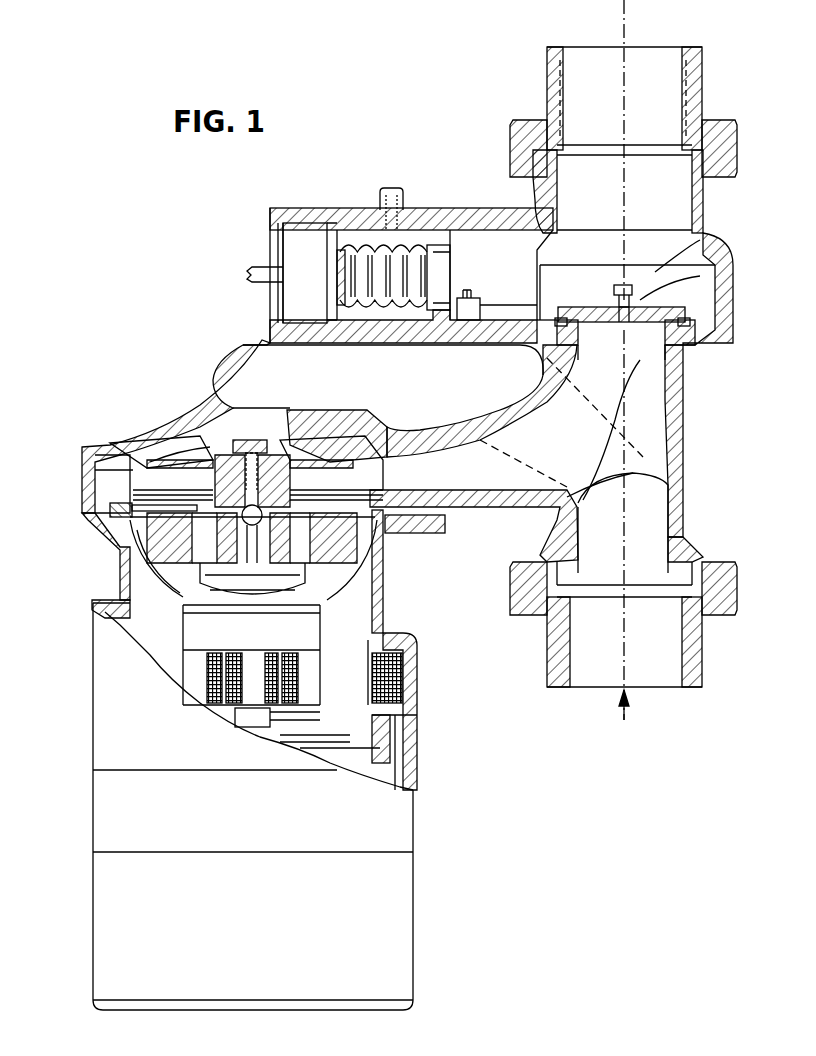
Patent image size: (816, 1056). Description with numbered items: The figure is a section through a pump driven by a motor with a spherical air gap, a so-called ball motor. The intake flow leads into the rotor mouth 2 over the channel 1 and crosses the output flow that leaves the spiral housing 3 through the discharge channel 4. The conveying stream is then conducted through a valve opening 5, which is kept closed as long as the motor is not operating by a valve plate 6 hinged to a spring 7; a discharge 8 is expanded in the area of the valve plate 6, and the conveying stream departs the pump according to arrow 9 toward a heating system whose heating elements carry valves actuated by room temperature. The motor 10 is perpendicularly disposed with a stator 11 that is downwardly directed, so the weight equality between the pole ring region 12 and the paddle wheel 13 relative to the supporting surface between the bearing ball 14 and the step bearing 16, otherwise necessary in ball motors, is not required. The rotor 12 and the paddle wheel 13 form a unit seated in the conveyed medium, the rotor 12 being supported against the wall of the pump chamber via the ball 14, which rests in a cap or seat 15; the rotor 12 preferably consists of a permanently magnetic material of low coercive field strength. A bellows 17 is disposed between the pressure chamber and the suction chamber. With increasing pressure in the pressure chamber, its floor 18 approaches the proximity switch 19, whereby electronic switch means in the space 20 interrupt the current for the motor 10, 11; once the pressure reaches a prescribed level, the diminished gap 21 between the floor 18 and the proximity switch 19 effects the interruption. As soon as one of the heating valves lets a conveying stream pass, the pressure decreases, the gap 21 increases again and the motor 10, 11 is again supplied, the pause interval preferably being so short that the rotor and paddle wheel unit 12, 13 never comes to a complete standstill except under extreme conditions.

The channel 1 is at (633, 533).
The rotor mouth 2 is at (222, 397).
The spiral housing 3 is at (107, 477).
The discharge channel 4 is at (630, 420).
The valve opening 5 is at (643, 343).
The valve plate 6 is at (677, 300).
The spring 7 is at (650, 297).
The discharge 8 is at (653, 277).
The arrow 9 is at (628, 27).
The motor 10 is at (117, 672).
The stator 11 is at (360, 705).
The rotor 12 is at (163, 548).
The paddle wheel 13 is at (195, 460).
The bearing ball 14 is at (297, 592).
The seat 15 is at (93, 458).
The step bearing 16 is at (250, 440).
The bellows 17 is at (352, 247).
The floor 18 is at (338, 255).
The proximity switch 19 is at (298, 233).
The space 20 is at (385, 912).
The gap 21 is at (330, 290).